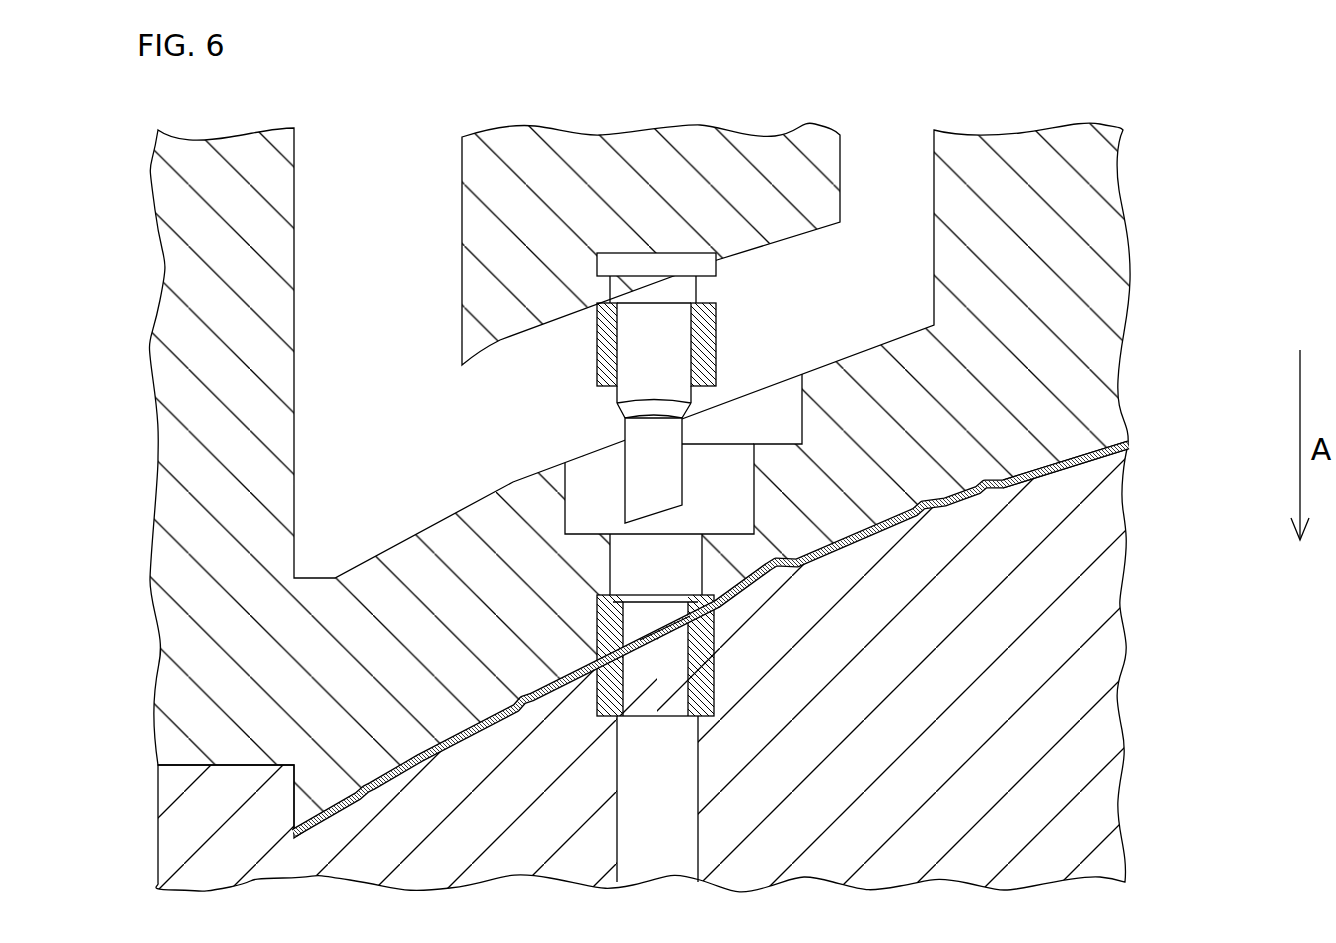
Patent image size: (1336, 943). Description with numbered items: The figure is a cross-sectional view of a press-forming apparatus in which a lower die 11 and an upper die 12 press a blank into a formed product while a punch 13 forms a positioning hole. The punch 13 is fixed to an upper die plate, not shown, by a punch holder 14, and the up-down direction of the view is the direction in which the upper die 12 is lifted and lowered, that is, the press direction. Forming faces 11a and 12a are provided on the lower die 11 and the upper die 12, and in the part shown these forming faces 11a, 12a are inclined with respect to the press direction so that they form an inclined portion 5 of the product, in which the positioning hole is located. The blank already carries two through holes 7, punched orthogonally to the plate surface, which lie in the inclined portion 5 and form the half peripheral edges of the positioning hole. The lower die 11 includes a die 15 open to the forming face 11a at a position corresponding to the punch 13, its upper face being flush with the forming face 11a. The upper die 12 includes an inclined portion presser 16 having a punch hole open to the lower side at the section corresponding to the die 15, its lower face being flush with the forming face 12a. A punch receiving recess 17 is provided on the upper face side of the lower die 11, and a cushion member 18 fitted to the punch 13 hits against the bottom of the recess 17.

The inclined portion 5 is at (822, 550).
The through holes 7 is at (630, 650).
The lower die 11 is at (1103, 730).
The forming face 11a is at (1126, 468).
The upper die 12 is at (1103, 173).
The forming face 12a is at (1126, 468).
The punch 13 is at (640, 477).
The punch holder 14 is at (473, 217).
The die 15 is at (715, 647).
The inclined portion presser 16 is at (597, 617).
The punch receiving recess 17 is at (735, 457).
The cushion member 18 is at (717, 323).